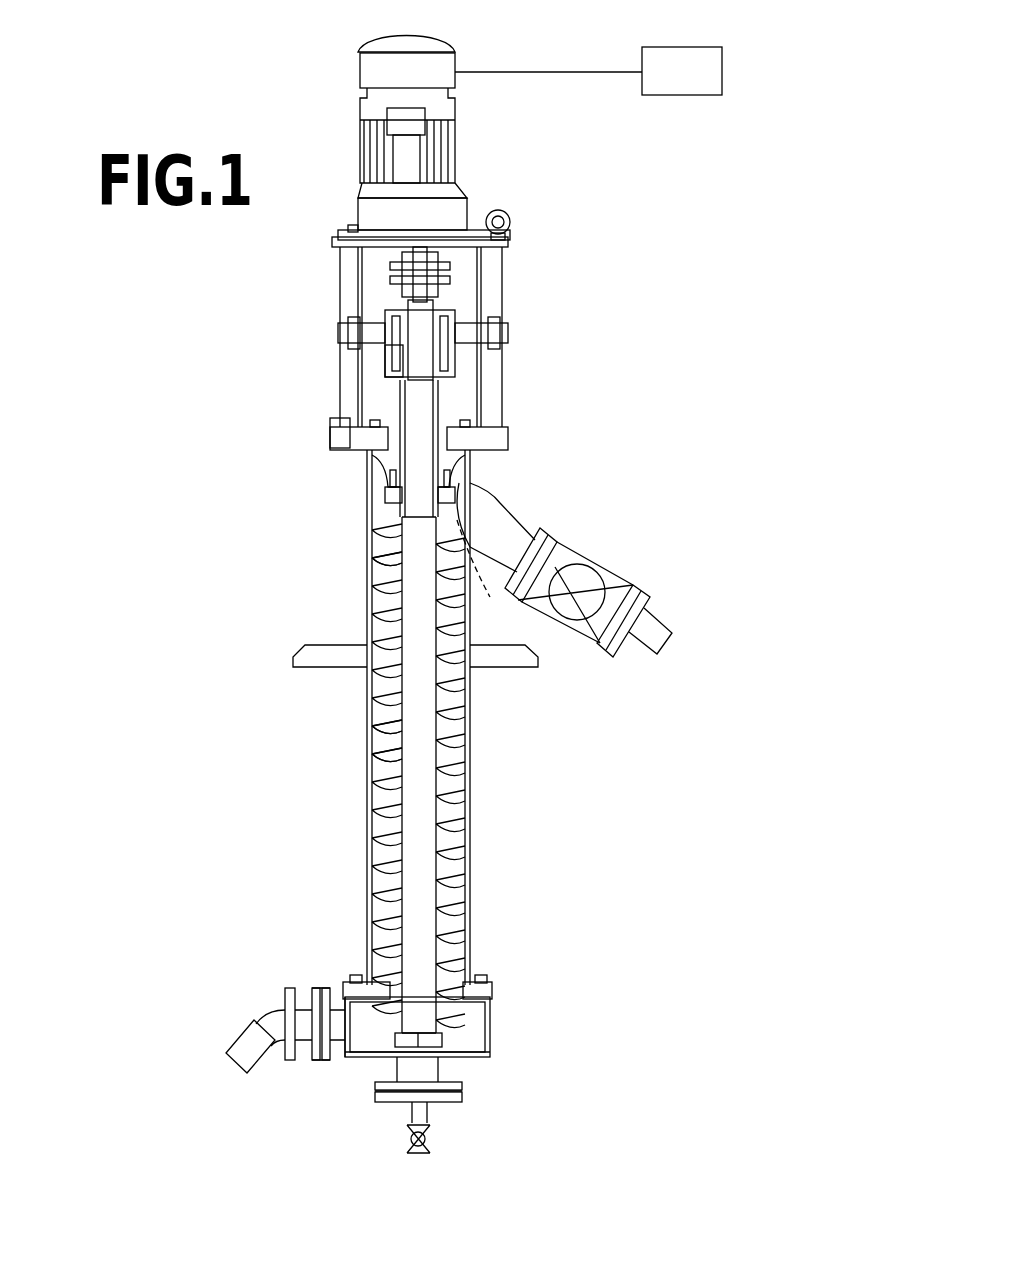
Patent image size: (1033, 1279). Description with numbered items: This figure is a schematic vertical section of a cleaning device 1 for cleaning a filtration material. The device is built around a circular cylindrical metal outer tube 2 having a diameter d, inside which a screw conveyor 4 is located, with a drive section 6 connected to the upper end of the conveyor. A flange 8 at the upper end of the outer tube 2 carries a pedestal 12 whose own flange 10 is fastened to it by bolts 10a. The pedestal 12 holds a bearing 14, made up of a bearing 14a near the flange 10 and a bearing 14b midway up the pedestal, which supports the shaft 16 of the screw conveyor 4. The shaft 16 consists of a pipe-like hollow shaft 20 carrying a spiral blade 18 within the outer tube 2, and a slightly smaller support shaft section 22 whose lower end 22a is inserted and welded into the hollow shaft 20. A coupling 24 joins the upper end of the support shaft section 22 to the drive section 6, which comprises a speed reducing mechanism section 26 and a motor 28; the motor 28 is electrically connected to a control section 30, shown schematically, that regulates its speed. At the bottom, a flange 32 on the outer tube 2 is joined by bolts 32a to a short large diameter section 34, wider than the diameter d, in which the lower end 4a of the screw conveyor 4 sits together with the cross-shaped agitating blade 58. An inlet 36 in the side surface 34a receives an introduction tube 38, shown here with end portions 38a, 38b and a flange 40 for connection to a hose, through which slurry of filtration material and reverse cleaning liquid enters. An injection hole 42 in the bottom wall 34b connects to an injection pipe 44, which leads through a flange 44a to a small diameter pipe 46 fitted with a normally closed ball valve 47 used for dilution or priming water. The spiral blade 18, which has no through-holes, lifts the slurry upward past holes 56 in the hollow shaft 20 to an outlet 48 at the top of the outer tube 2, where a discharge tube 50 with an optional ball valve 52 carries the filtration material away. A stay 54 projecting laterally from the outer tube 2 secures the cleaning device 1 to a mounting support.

The cleaning device 1 is at (726, 191).
The outer tube 2 is at (471, 718).
The screw conveyor 4 is at (398, 632).
The lower end 4a is at (407, 1052).
The drive section 6 is at (329, 131).
The flange 8 is at (357, 450).
The flange 10 is at (502, 428).
The bolts 10a is at (337, 417).
The pedestal 12 is at (506, 287).
The bearing 14 is at (160, 337).
The bearing 14a is at (392, 488).
The bearing 14b is at (385, 357).
The shaft 16 is at (742, 353).
The spiral blade 18 is at (370, 728).
The hollow shaft 20 is at (692, 1055).
The support shaft section 22 is at (692, 523).
The lower end 22a is at (418, 560).
The coupling 24 is at (390, 273).
The speed reducing mechanism section 26 is at (470, 204).
The motor 28 is at (462, 143).
The control section 30 is at (690, 47).
The flange 32 is at (490, 982).
The bolts 32a is at (357, 977).
The large diameter section 34 is at (496, 1020).
The side surface 34a is at (338, 997).
The bottom wall 34b is at (483, 1060).
The inlet 36 is at (305, 1052).
The introduction tube 38 is at (226, 1047).
The outlet pipe flange 38a is at (338, 1047).
The outlet pipe end flange 38b is at (250, 1068).
The flange 40 is at (288, 983).
The injection hole 42 is at (413, 1075).
The injection pipe 44 is at (440, 1063).
The flange 44a is at (467, 1093).
The small diameter pipe 46 is at (430, 1108).
The ball valve 47 is at (433, 1143).
The outlet 48 is at (485, 553).
The discharge tube 50 is at (515, 512).
The ball valve 52 is at (617, 585).
The stay 54 is at (297, 658).
The holes 56 is at (397, 747).
The agitating blade 58 is at (493, 1043).
The diameter d is at (330, 873).